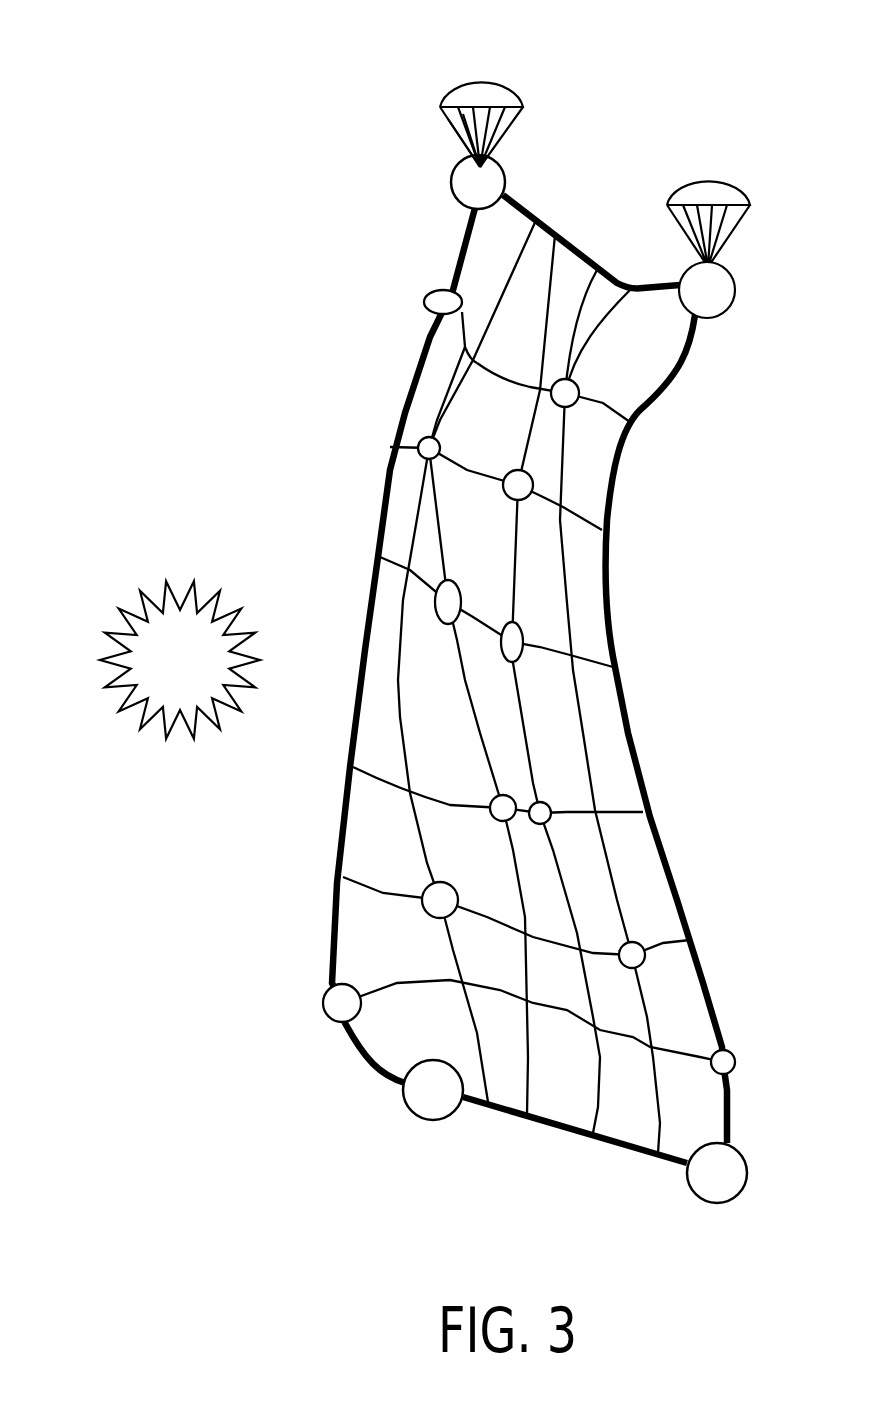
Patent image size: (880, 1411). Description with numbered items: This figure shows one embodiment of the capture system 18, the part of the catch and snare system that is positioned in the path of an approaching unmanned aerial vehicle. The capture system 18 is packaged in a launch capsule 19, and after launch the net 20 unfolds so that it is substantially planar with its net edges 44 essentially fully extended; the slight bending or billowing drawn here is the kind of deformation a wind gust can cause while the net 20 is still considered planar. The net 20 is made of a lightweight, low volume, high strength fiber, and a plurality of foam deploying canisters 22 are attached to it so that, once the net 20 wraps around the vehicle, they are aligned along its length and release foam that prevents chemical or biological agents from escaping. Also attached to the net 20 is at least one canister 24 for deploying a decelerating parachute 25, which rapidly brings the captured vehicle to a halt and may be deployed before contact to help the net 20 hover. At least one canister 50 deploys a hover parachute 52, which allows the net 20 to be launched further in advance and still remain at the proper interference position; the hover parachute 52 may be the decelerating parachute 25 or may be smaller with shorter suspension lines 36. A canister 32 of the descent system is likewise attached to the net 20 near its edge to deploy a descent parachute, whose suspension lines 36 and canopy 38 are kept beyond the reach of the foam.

The capture system 18 is at (183, 145).
The launch capsule 19 is at (100, 571).
The net 20 is at (670, 383).
The foam deploying canisters 22 is at (547, 810).
The canister 24 is at (433, 1103).
The decelerating parachute 25 is at (708, 249).
The canister 32 is at (544, 175).
The suspension lines 36 is at (470, 132).
The canopy 38 is at (481, 78).
The net edges 44 is at (608, 273).
The canister 50 is at (505, 172).
The hover parachute 52 is at (708, 178).